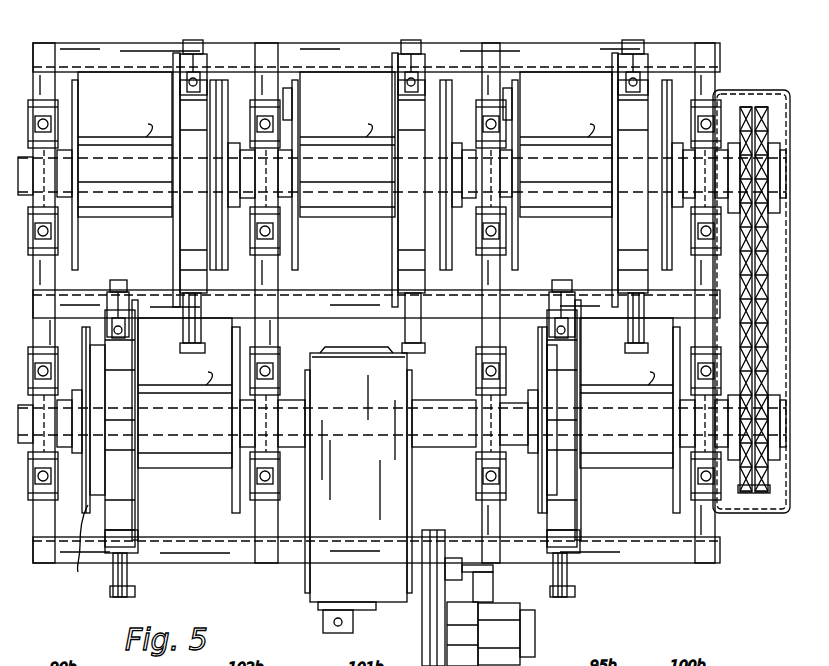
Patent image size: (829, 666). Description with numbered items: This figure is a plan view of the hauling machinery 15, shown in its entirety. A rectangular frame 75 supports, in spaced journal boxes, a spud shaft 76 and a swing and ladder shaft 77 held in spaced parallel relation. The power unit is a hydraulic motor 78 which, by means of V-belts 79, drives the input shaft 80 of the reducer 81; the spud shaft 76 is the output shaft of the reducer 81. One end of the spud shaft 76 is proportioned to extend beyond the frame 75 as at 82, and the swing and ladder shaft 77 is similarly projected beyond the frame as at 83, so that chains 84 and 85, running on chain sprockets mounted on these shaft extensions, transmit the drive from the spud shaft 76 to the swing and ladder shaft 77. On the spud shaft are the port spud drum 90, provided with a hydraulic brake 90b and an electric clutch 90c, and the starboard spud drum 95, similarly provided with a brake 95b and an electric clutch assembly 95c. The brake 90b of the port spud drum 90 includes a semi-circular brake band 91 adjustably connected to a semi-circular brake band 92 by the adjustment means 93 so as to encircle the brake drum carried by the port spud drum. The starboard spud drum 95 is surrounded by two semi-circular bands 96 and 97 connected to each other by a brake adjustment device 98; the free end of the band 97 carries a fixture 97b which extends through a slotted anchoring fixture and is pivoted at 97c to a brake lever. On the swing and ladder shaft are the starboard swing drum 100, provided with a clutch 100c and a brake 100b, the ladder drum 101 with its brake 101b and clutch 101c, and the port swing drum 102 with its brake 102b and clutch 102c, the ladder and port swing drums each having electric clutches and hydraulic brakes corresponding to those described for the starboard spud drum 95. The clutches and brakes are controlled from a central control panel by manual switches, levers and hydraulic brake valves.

The hauling machinery 15 is at (650, 565).
The rectangular frame 75 is at (222, 563).
The spud shaft 76 is at (388, 407).
The swing and ladder shaft 77 is at (392, 200).
The hydraulic motor 78 is at (512, 626).
The V-belts 79 is at (424, 614).
The input shaft 80 is at (452, 560).
The reducer 81 is at (388, 504).
The spud shaft extension 82 is at (780, 455).
The swing and ladder shaft extension 83 is at (779, 108).
The chain 84 is at (743, 107).
The chain 85 is at (760, 107).
The port spud drum 90 is at (192, 457).
The brake 90b is at (126, 503).
The electric clutch 90c is at (78, 560).
The semi-circular brake band 91 is at (130, 366).
The semi-circular brake band 92 is at (134, 297).
The adjustment means 93 is at (113, 296).
The starboard spud drum 95 is at (640, 453).
The brake 95b is at (552, 500).
The electric clutch assembly 95c is at (532, 525).
The semi-circular band 96 is at (568, 368).
The semi-circular band 97 is at (556, 296).
The fixture 97b is at (566, 572).
The pivot 97c is at (574, 590).
The brake adjustment device 98 is at (578, 297).
The starboard swing drum 100 is at (564, 216).
The brake 100b is at (613, 78).
The clutch 100c is at (672, 80).
The ladder drum 101 is at (332, 218).
The ladder drum brake 101b is at (392, 78).
The ladder drum clutch 101c is at (452, 86).
The port swing drum 102 is at (116, 216).
The port swing drum brake 102b is at (174, 60).
The port swing drum clutch 102c is at (228, 80).